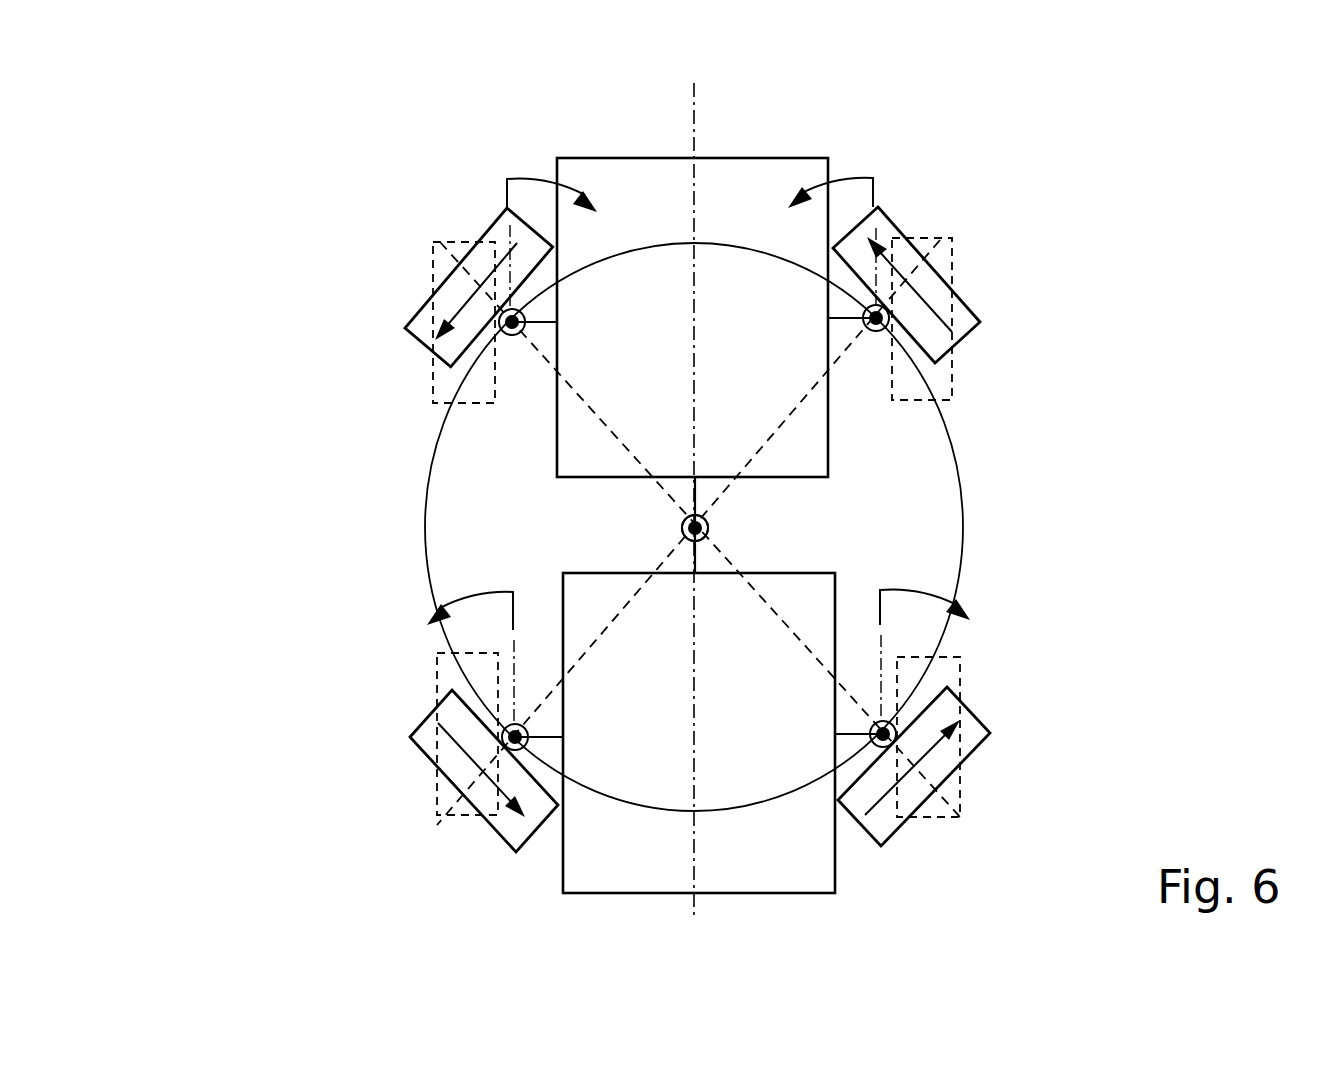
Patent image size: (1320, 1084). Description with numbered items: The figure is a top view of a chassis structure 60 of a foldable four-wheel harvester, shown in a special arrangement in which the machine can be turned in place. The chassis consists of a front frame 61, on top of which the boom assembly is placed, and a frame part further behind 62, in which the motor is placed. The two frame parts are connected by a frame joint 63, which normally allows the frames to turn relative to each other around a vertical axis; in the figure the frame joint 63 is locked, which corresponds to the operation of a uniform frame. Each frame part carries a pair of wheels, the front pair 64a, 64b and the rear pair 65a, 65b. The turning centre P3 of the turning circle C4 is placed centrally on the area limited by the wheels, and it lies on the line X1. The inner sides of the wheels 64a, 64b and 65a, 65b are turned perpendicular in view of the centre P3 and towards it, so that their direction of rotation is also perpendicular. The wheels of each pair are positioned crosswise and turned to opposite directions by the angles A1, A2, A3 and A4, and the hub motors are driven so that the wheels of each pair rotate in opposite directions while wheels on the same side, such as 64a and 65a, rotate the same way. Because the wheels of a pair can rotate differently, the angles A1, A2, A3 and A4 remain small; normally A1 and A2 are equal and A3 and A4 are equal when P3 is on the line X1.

The chassis structure 60 is at (262, 514).
The front frame 61 is at (815, 455).
The frame part further behind 62 is at (590, 852).
The frame joint 63 is at (683, 526).
The wheel 64a is at (968, 322).
The wheel 64b is at (417, 318).
The wheel 65a is at (978, 736).
The wheel 65b is at (425, 740).
The angle A1 is at (850, 177).
The angle A2 is at (526, 178).
The angle A3 is at (930, 597).
The angle A4 is at (452, 605).
The turning circle C4 is at (437, 437).
The turning centre P3 is at (708, 528).
The line X1 is at (693, 118).